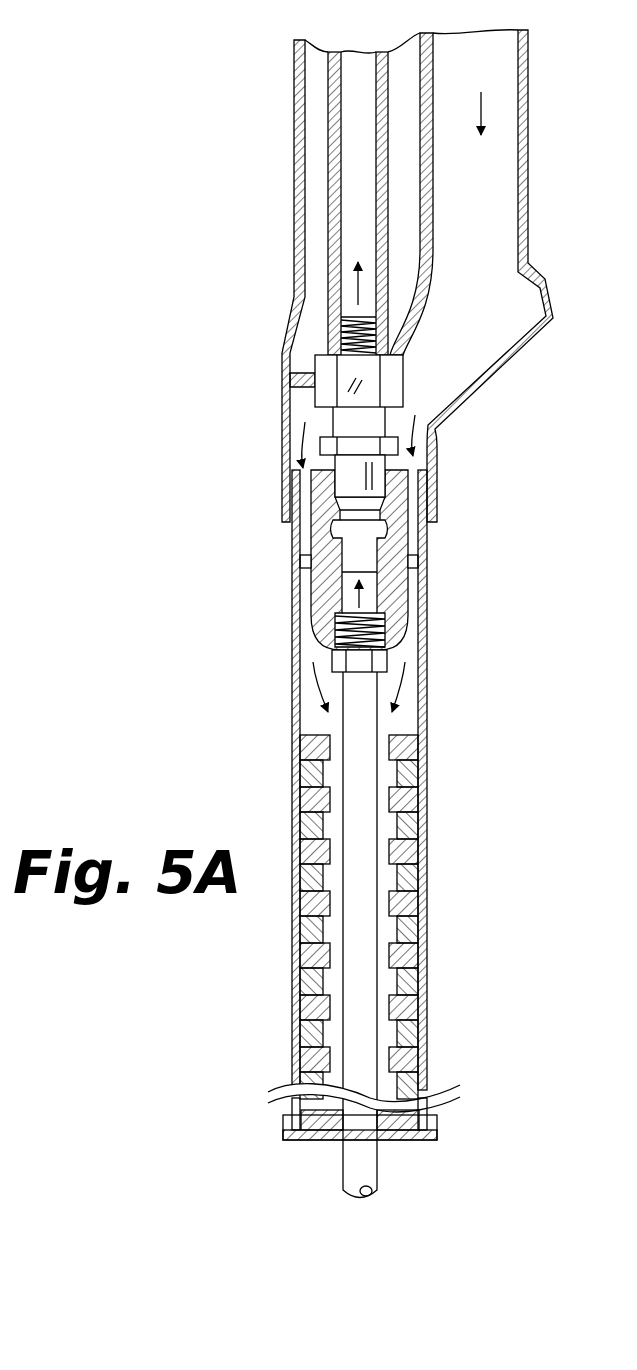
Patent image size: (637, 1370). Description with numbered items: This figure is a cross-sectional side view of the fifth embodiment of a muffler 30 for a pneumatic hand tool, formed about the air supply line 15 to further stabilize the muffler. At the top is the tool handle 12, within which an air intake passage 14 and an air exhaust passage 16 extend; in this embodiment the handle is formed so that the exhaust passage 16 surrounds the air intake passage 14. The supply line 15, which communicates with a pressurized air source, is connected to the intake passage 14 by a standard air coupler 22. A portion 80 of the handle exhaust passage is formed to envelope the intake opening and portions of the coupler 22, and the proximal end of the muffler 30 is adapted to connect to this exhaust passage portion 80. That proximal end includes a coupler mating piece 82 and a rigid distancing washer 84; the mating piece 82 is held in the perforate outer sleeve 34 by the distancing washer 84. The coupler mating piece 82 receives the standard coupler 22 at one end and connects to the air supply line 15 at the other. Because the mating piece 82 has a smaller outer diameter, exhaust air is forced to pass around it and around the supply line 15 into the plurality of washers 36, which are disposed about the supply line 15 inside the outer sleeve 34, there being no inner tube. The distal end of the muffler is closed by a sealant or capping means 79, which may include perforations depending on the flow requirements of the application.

The handle 12 is at (294, 90).
The air intake passage 14 is at (357, 210).
The air supply line 15 is at (350, 715).
The air exhaust passage 16 is at (502, 150).
The standard air coupler 22 is at (353, 478).
The muffler 30 is at (524, 747).
The perforate outer sleeve 34 is at (428, 878).
The washers 36 is at (400, 958).
The capping means 79 is at (437, 1130).
The exhaust passage portion 80 is at (435, 448).
The coupler mating piece 82 is at (395, 593).
The rigid distancing washer 84 is at (410, 562).